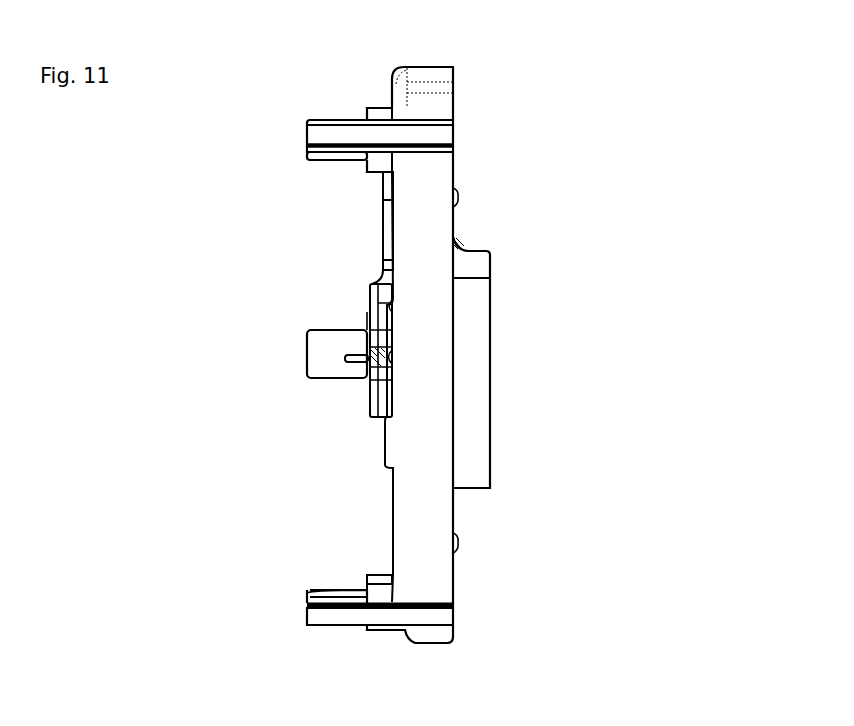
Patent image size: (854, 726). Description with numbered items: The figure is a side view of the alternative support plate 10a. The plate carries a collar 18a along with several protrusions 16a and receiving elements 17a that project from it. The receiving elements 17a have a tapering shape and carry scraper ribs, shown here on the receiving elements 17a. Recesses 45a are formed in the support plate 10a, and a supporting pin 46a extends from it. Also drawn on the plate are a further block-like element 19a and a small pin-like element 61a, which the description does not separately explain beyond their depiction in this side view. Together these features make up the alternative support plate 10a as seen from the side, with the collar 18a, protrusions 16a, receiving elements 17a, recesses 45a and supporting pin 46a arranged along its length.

The alternative support plate 10a is at (620, 132).
The protrusions 16a is at (373, 110).
The receiving elements 17a is at (322, 155).
The collar 18a is at (427, 223).
The connector block 19a is at (473, 323).
The recesses 45a is at (338, 133).
The supporting pin 46a is at (366, 348).
The pin 61a is at (352, 360).